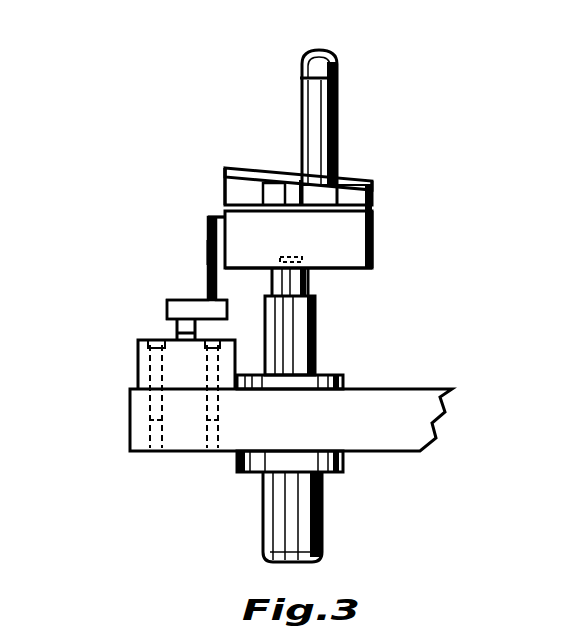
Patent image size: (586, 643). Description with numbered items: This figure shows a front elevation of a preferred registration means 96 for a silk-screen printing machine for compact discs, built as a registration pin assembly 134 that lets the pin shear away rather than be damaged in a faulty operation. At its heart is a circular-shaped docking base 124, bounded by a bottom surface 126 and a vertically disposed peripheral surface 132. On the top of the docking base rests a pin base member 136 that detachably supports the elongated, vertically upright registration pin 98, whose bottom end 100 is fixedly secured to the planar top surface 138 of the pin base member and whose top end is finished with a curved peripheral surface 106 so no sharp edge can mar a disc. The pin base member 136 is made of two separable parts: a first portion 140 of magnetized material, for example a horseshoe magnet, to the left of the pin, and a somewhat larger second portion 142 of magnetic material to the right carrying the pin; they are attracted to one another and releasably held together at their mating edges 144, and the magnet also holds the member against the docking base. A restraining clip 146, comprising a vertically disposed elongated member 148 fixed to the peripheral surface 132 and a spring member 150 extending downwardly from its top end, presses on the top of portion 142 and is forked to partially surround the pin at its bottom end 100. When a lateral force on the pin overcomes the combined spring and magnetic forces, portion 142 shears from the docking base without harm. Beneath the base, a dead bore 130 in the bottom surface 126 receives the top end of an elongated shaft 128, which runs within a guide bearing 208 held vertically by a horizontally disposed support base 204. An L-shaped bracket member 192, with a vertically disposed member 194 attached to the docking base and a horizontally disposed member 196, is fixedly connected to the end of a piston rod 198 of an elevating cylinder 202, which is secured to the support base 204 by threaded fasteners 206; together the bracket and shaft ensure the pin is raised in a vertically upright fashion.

The registration means 96 is at (416, 208).
The registration pin 98 is at (344, 100).
The bottom end 100 is at (345, 182).
The curved peripheral surface 106 is at (333, 60).
The docking base 124 is at (273, 247).
The bottom surface 126 is at (358, 270).
The elongated shaft 128 is at (273, 277).
The dead bore 130 is at (304, 259).
The peripheral surface 132 is at (372, 232).
The registration pin assembly 134 is at (413, 280).
The pin base member 136 is at (398, 158).
The top surface of pin base member 138 is at (372, 178).
The first portion of pin base member 140 is at (292, 172).
The second portion of pin base member 142 is at (338, 198).
The mating edges 144 is at (340, 183).
The restraining clip 146 is at (219, 170).
The elongated member 148 is at (222, 186).
The spring member 150 is at (264, 182).
The L-shaped bracket member 192 is at (200, 255).
The vertically disposed member 194 is at (206, 233).
The horizontally disposed member 196 is at (172, 302).
The piston rod 198 is at (200, 330).
The elevating cylinder 202 is at (136, 366).
The support base 204 is at (362, 454).
The threaded fasteners 206 is at (207, 405).
The guide bearing 208 is at (238, 473).